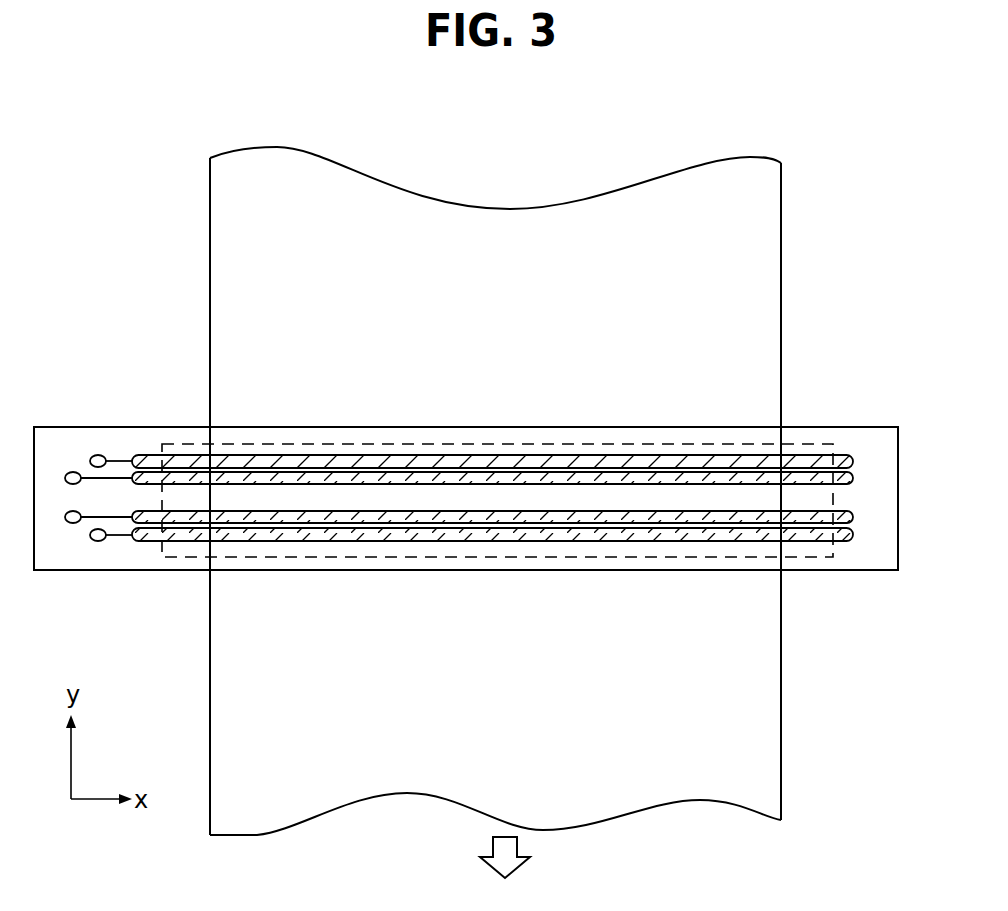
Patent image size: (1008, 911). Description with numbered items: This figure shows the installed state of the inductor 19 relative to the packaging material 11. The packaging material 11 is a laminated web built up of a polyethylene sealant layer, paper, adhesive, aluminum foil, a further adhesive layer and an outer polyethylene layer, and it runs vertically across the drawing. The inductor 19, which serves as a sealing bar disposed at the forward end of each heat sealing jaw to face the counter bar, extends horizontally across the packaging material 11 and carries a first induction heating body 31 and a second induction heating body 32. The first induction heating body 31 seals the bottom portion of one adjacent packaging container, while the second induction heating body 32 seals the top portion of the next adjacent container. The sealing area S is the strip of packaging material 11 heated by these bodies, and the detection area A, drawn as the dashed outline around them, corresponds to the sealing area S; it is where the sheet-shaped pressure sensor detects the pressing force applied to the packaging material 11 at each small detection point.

The packaging material 11 is at (753, 228).
The inductor 19 is at (862, 418).
The first induction heating body 31 is at (258, 457).
The second induction heating body 32 is at (268, 541).
The detection area A is at (827, 560).
The sealing area S is at (441, 506).